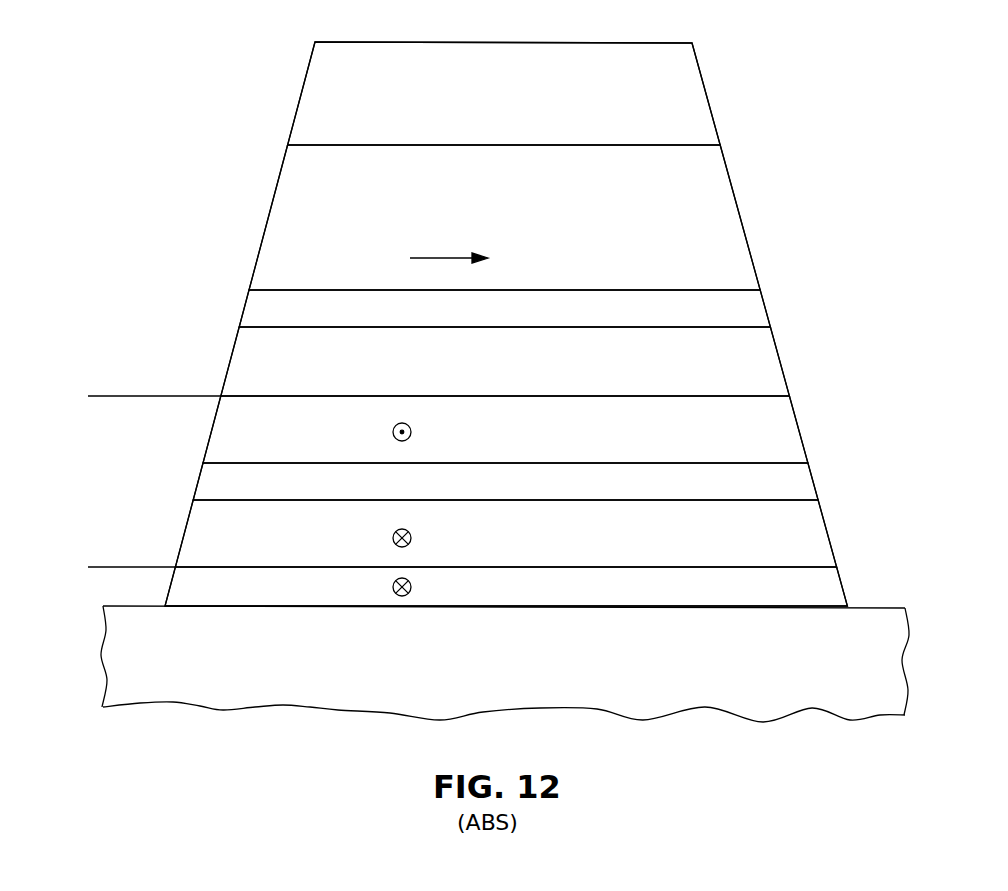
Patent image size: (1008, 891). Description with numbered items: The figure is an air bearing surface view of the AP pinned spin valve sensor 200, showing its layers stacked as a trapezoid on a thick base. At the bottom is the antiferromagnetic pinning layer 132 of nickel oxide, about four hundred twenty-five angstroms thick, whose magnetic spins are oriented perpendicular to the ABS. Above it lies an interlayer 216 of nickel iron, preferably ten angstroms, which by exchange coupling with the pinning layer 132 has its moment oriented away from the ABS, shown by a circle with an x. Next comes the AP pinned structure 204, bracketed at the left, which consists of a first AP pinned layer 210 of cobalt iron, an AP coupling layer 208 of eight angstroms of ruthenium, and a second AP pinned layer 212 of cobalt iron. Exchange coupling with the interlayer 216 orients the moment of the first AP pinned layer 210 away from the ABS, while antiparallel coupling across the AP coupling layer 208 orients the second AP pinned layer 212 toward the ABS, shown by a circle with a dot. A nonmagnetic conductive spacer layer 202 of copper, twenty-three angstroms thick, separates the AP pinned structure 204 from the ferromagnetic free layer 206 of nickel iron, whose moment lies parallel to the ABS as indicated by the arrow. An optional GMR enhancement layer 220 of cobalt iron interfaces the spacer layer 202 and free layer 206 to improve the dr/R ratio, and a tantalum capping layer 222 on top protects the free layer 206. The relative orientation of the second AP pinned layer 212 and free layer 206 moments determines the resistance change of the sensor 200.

The AP pinned spin valve sensor 200 is at (732, 50).
The capping layer 222 is at (697, 110).
The free layer 206 is at (718, 203).
The GMR enhancement layer 220 is at (750, 310).
The spacer layer 202 is at (767, 370).
The second AP pinned layer 212 is at (783, 427).
The AP coupling layer 208 is at (800, 485).
The first AP pinned layer 210 is at (813, 535).
The interlayer 216 is at (183, 586).
The AP pinned structure 204 is at (98, 396).
The pinning layer 132 is at (223, 700).